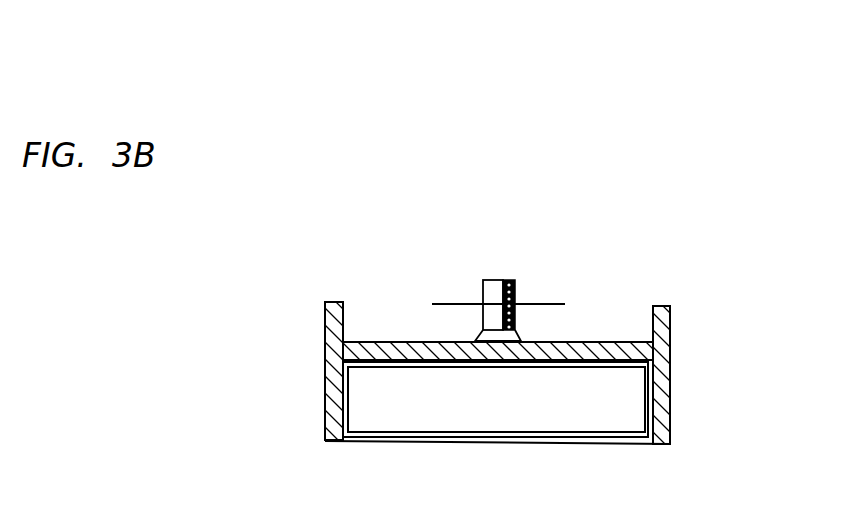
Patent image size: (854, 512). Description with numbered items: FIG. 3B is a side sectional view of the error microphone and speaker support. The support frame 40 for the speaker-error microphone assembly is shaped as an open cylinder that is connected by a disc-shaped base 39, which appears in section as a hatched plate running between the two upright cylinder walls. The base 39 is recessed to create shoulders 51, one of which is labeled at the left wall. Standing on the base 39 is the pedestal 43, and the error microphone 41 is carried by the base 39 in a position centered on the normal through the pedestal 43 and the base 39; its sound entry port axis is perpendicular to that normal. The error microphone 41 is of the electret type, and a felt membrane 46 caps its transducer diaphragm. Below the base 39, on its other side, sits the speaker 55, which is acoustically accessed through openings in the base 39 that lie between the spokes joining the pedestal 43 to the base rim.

The disc-shaped base 39 is at (352, 342).
The support frame 40 is at (672, 511).
The error microphone 41 is at (484, 280).
The pedestal 43 is at (521, 341).
The felt membrane 46 is at (516, 292).
The shoulders 51 is at (325, 326).
The speaker 55 is at (353, 444).